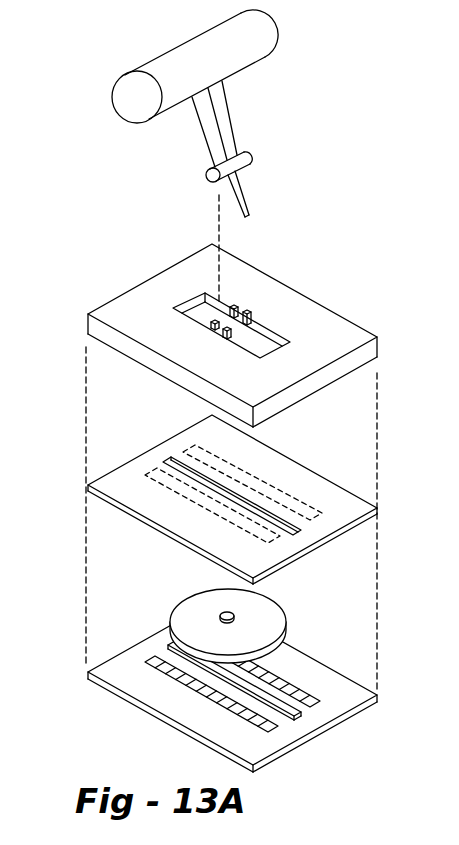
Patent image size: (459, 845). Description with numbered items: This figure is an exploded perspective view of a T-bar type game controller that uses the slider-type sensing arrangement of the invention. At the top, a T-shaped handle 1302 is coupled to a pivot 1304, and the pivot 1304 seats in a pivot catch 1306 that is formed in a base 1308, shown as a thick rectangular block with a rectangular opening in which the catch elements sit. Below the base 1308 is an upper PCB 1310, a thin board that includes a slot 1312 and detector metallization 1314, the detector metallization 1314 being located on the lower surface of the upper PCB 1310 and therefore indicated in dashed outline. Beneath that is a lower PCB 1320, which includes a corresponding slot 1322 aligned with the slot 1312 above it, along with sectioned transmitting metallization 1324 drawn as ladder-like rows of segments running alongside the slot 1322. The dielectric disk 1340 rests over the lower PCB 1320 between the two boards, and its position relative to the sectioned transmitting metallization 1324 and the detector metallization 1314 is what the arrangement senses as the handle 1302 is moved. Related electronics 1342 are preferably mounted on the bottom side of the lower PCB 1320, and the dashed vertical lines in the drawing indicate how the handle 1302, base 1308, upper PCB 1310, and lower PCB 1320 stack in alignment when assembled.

The T-shaped handle 1302 is at (260, 38).
The pivot 1304 is at (252, 156).
The pivot catch 1306 is at (250, 308).
The base 1308 is at (140, 293).
The upper PCB 1310 is at (185, 430).
The slot 1312 is at (258, 510).
The detector metallization 1314 is at (213, 510).
The lower PCB 1320 is at (204, 699).
The slot 1322 is at (290, 717).
The sectioned transmitting metallization 1324 is at (152, 658).
The dielectric disk 1340 is at (275, 622).
The electronics 1342 is at (262, 753).